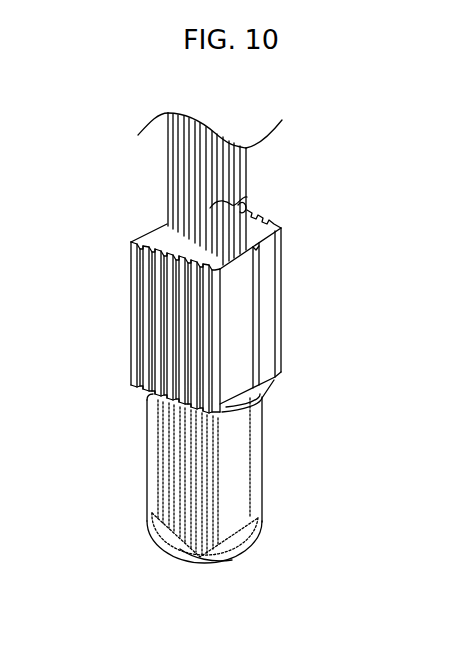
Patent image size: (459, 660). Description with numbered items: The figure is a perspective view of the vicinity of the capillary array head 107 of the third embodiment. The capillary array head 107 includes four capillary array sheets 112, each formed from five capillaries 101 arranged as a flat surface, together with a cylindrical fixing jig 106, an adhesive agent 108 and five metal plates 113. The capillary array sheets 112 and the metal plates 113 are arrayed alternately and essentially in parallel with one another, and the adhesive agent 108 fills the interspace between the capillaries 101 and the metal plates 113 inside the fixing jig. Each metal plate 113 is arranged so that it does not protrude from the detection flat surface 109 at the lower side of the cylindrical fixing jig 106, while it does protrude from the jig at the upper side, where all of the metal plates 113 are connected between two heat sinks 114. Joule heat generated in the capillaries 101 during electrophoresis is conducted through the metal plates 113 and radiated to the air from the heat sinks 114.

The capillary 101 is at (168, 172).
The capillary array sheet 112 is at (247, 207).
The metal plate 113 is at (242, 328).
The heat sink 114 is at (215, 297).
The adhesive agent 108 is at (250, 396).
The cylindrical fixing jig 106 is at (262, 495).
The capillary array head 107 is at (137, 393).
The detection flat surface 109 is at (238, 556).